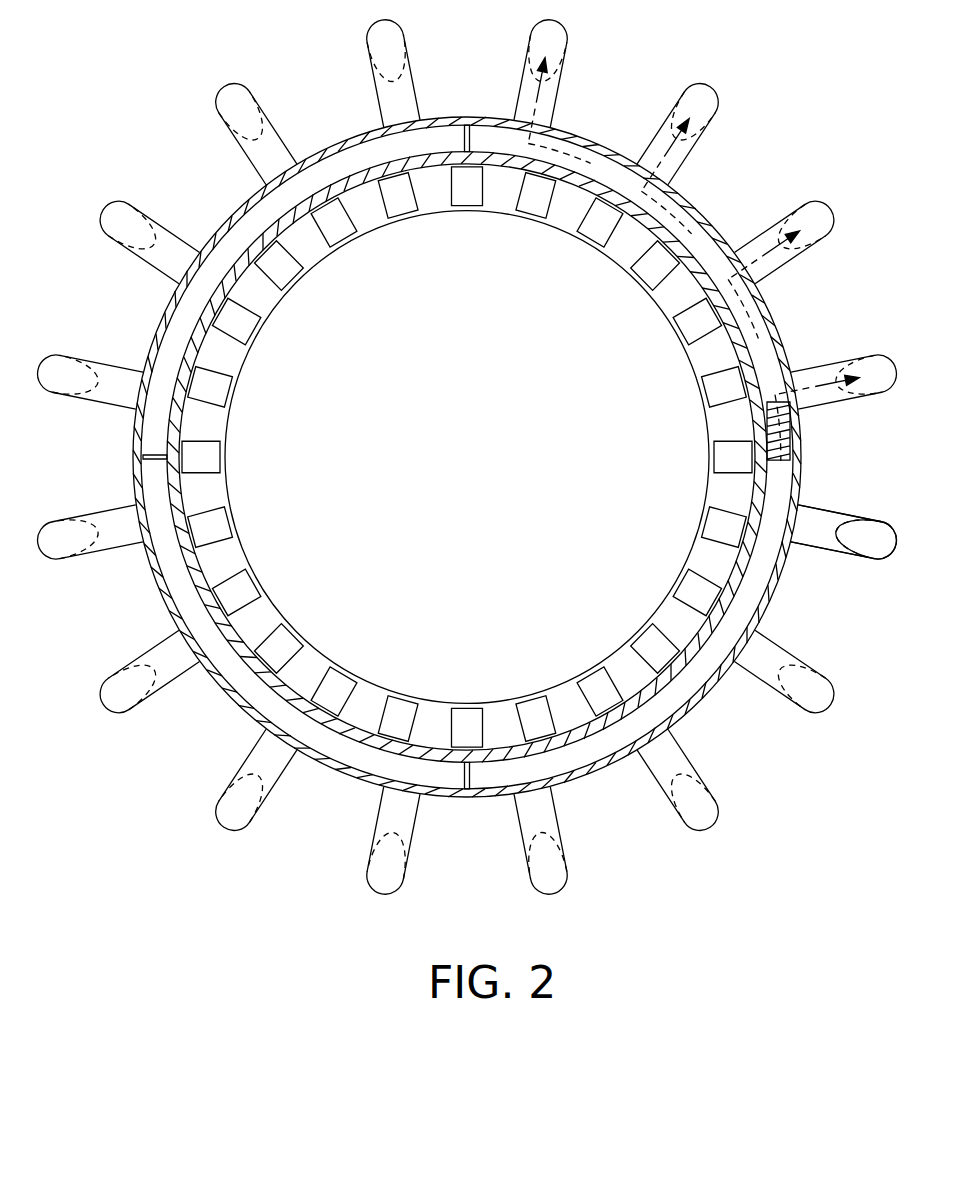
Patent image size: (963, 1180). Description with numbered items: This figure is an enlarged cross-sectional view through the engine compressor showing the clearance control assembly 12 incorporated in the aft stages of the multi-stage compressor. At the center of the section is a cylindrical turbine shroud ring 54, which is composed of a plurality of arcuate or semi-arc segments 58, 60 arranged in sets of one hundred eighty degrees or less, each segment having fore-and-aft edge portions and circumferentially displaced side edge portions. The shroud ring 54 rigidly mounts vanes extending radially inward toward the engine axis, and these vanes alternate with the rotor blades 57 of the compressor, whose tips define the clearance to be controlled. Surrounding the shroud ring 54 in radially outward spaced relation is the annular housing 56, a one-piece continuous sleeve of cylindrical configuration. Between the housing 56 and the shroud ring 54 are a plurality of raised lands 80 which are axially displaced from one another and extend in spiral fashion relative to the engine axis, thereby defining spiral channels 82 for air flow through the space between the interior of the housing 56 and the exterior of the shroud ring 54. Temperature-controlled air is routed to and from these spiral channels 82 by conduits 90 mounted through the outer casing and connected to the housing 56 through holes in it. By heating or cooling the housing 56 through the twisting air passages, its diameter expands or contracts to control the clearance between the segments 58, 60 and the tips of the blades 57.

The clearance control assembly 12 is at (730, 114).
The turbine shroud ring 54 is at (615, 756).
The annular housing 56 is at (785, 583).
The rotor blade 57 is at (467, 197).
The arcuate segment 58 is at (627, 212).
The arcuate segment 60 is at (178, 424).
The raised land 80 is at (470, 127).
The spiral channel 82 is at (250, 228).
The exit conduit 90 is at (272, 132).